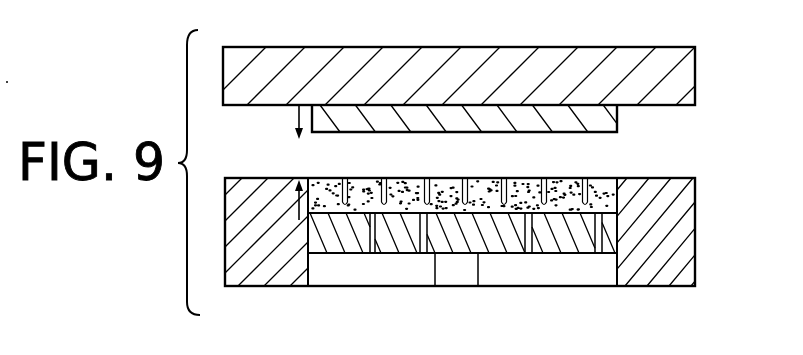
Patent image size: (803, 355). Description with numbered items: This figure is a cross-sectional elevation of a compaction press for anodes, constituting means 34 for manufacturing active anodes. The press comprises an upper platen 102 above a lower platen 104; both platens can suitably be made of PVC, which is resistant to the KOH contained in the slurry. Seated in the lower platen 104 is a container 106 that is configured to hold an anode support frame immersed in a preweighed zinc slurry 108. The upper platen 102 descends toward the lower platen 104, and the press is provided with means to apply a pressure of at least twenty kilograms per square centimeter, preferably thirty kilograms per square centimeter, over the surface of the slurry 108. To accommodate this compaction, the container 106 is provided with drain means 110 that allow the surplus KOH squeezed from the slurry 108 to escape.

The means for manufacturing active anodes 34 is at (498, 240).
The upper platen 102 is at (686, 129).
The lower platen 104 is at (712, 246).
The container 106 is at (468, 290).
The zinc slurry 108 is at (616, 152).
The drain means 110 is at (528, 238).